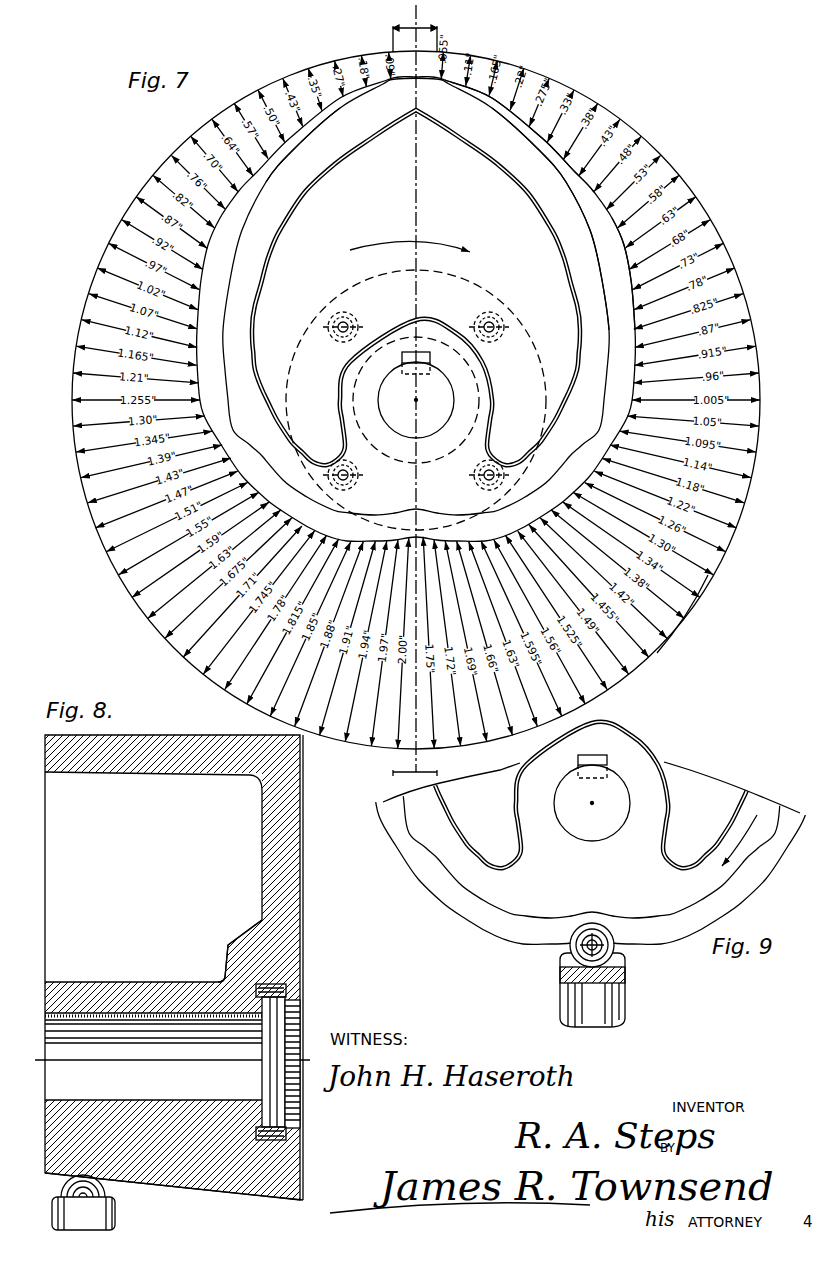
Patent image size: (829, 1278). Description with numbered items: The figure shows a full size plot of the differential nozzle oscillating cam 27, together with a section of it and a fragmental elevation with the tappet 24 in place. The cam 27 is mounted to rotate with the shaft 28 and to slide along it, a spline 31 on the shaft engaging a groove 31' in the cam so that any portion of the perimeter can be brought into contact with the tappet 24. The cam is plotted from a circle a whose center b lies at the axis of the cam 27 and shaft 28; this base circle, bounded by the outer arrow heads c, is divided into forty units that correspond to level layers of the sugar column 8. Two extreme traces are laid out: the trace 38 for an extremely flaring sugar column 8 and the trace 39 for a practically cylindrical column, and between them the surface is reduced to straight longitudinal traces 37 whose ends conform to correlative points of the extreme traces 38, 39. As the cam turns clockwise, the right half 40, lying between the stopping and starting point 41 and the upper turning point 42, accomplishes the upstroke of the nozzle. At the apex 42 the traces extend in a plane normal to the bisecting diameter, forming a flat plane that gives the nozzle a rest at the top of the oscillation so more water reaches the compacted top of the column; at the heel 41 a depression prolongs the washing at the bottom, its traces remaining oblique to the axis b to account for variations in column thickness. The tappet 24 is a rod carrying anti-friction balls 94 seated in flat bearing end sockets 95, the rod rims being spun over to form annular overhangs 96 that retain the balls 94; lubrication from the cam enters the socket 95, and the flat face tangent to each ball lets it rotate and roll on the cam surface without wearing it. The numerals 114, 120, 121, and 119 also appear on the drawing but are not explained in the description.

In FIG. 7, the upper turning point 42 is at (417, 84).
In FIG. 8, the upper turning point 42 is at (152, 737).
In FIG. 7, the cam operating trace for a practically cylindrical sugar column 39 is at (540, 148).
In FIG. 7, the cam operating trace for the extremely flaring sugar column 38 is at (562, 180).
In FIG. 7, the straight longitudinal trace 37 is at (604, 254).
In FIG. 7, the right half of the cam 40 is at (606, 274).
In FIG. 7, the stopping and starting point 41 is at (420, 511).
In FIG. 8, the stopping and starting point 41 is at (251, 1194).
In FIG. 9, the stopping and starting point 41 is at (598, 917).
In FIG. 7, the differential nozzle oscillating cam 27 is at (416, 287).
In FIG. 8, the differential nozzle oscillating cam 27 is at (153, 877).
In FIG. 9, the differential nozzle oscillating cam 27 is at (592, 692).
In FIG. 7, the bolt circle 114 is at (425, 400).
In FIG. 7, the bolt 120 is at (495, 318).
In FIG. 8, the bolt 120 is at (307, 981).
In FIG. 7, the shaft 28 is at (447, 385).
In FIG. 9, the shaft 28 is at (606, 784).
In FIG. 7, the spline 31 is at (434, 326).
In FIG. 9, the spline 31 is at (617, 738).
In FIG. 7, the groove 31' is at (396, 329).
In FIG. 8, the groove 31' is at (153, 1056).
In FIG. 9, the groove 31' is at (641, 749).
In FIG. 7, the center b is at (416, 400).
In FIG. 8, the center b is at (170, 1063).
In FIG. 9, the center b is at (592, 803).
In FIG. 7, the sugar column 8 is at (386, 18).
In FIG. 7, the outer arrow heads c is at (708, 575).
In FIG. 7, the circle a is at (657, 653).
In FIG. 8, the recess corner 121 is at (215, 983).
In FIG. 8, the bolt 119 is at (305, 952).
In FIG. 8, the annular overhangs 96 is at (60, 1186).
In FIG. 9, the annular overhangs 96 is at (604, 940).
In FIG. 8, the anti-friction balls 94 is at (107, 1183).
In FIG. 9, the anti-friction balls 94 is at (566, 938).
In FIG. 9, the flat bearing end sockets 95 is at (566, 975).
In FIG. 8, the tappet 24 is at (118, 1215).
In FIG. 9, the tappet 24 is at (628, 989).